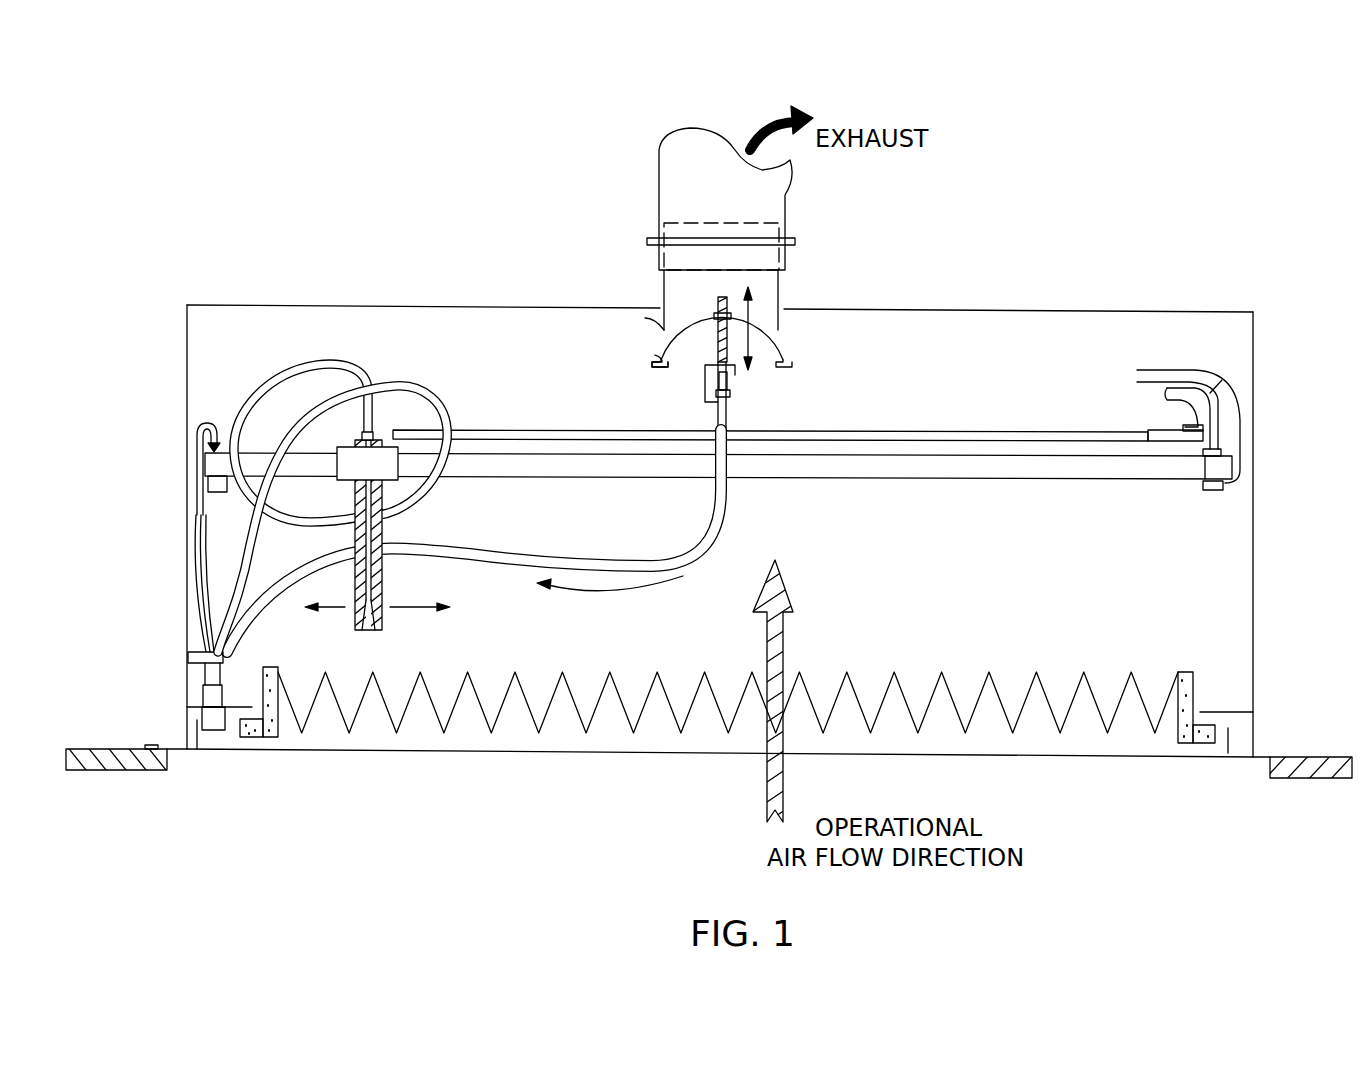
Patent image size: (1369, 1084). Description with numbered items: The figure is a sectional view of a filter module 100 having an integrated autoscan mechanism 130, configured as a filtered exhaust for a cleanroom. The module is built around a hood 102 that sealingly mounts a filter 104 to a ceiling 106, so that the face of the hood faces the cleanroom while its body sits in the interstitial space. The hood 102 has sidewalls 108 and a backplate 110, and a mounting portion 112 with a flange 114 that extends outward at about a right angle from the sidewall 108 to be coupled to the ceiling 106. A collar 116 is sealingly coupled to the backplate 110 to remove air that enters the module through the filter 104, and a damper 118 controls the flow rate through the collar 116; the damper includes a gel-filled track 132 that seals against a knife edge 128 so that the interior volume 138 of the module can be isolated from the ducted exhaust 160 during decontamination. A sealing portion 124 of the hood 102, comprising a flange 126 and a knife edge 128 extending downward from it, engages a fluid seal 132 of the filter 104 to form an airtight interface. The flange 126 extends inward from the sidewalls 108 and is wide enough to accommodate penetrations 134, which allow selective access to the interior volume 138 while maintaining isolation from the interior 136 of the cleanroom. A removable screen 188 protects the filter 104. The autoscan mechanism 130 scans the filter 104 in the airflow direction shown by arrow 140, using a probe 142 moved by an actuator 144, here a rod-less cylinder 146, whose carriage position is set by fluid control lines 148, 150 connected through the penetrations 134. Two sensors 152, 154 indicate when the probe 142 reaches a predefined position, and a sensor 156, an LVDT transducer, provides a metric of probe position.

The filter module 100 is at (192, 245).
The hood 102 is at (187, 352).
The filter 104 is at (478, 712).
The ceiling 106 is at (140, 771).
The sidewall 108 is at (1253, 497).
The backplate 110 is at (1058, 312).
The mounting portion 112 is at (148, 737).
The flange 114 is at (190, 712).
The collar 116 is at (783, 295).
The damper 118 is at (790, 352).
The sealing portion 124 is at (250, 690).
The flange 126 is at (248, 698).
The knife edge 128 is at (660, 320).
The autoscan mechanism 130 is at (447, 378).
The gel-filled track 132 is at (258, 740).
The penetrations 134 is at (203, 690).
The interior of the cleanroom 136 is at (510, 876).
The interior volume 138 is at (952, 585).
The arrow 140 is at (768, 770).
The probe 142 is at (398, 517).
The actuator 144 is at (547, 492).
The rod-less cylinder 146 is at (270, 447).
The fluid control line 148 is at (205, 425).
The fluid control line 150 is at (1175, 392).
The sensor 152 is at (212, 490).
The sensor 154 is at (1207, 490).
The sensor 156 is at (1157, 441).
The ducted exhaust 160 is at (690, 187).
The screen 188 is at (625, 752).